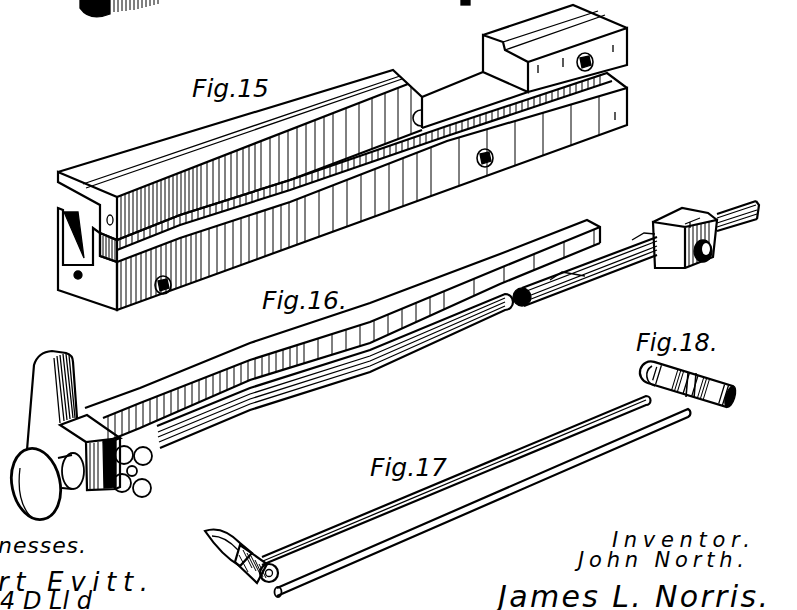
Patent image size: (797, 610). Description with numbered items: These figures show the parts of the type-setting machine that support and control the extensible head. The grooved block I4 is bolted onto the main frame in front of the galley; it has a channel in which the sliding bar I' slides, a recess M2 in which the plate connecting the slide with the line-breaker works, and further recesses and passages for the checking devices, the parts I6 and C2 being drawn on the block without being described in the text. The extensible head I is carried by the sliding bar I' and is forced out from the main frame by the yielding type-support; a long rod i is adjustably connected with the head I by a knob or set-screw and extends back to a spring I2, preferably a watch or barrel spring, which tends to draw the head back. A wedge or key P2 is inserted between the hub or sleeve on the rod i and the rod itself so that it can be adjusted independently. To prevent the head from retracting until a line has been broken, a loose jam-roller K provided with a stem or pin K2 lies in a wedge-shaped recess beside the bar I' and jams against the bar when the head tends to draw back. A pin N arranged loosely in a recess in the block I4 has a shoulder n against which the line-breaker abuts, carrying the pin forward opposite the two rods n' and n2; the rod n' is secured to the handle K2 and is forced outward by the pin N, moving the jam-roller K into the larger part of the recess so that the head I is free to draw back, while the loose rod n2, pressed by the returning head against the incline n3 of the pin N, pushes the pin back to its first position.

In FIG. 15, the block I4 is at (190, 138).
In FIG. 15, the rail end tongue I6 is at (72, 196).
In FIG. 15, the recess M2 is at (475, 100).
In FIG. 15, the clamp block C2 is at (620, 78).
In FIG. 16, the sliding bar I' is at (342, 331).
In FIG. 16, the rod i is at (391, 364).
In FIG. 16, the extensible head I is at (78, 437).
In FIG. 16, the wedge or key P2 is at (637, 236).
In FIG. 16, the spring I2 is at (657, 221).
In FIG. 17, the rod n' is at (456, 480).
In FIG. 17, the rod n2 is at (483, 503).
In FIG. 17, the stem or pin K2 is at (228, 541).
In FIG. 17, the jam-roller K is at (266, 578).
In FIG. 18, the pin N is at (687, 384).
In FIG. 18, the shoulder n is at (634, 370).
In FIG. 18, the incline n3 is at (700, 401).